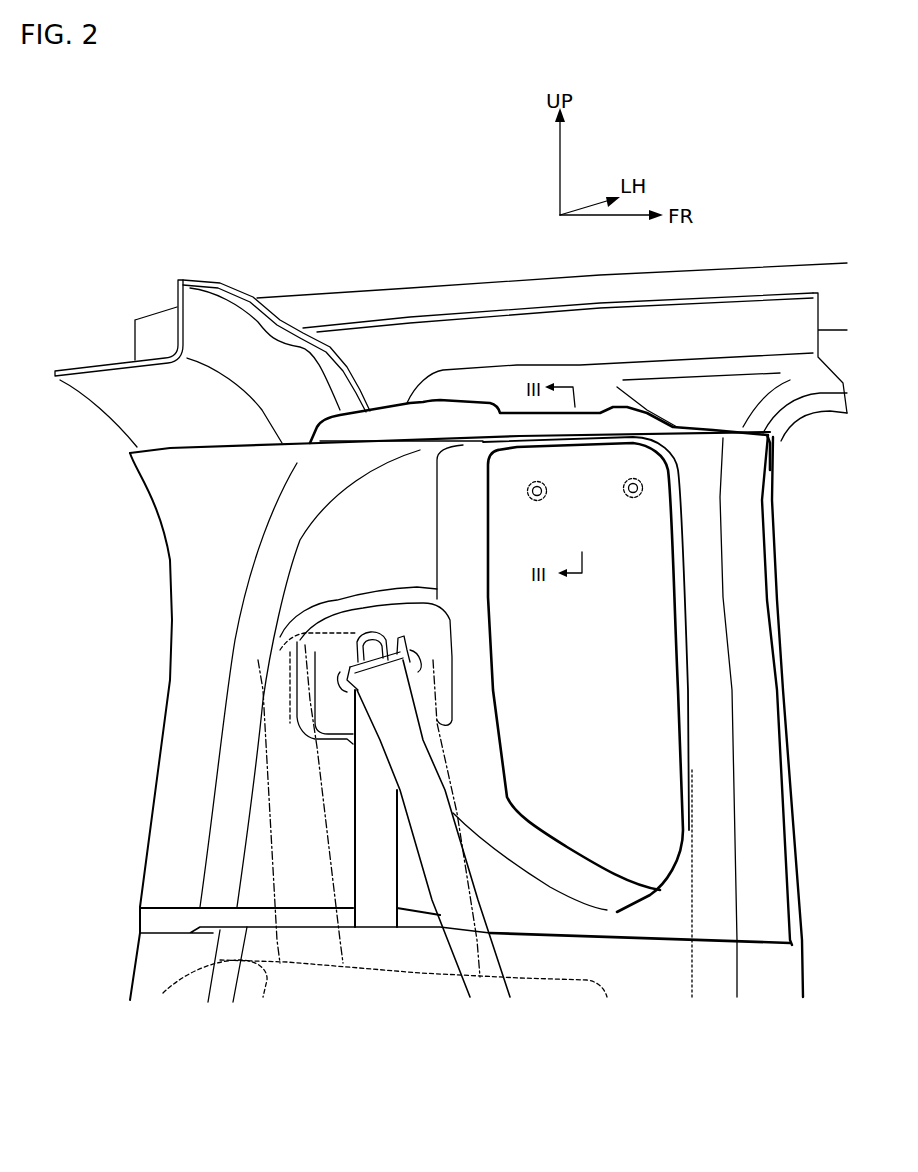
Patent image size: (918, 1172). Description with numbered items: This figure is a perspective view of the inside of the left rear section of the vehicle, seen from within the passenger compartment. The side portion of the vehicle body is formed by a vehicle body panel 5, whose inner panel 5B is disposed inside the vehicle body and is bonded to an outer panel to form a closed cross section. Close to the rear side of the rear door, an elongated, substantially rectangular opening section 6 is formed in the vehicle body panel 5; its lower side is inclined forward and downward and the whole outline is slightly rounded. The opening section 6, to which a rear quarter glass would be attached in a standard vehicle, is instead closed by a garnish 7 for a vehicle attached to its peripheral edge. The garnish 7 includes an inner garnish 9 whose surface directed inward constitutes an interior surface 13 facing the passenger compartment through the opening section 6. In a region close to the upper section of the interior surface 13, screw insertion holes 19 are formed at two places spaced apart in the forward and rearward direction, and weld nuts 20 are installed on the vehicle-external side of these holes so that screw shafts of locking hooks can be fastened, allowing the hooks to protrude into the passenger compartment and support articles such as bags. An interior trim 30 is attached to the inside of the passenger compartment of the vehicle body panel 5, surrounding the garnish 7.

The vehicle body panel 5 is at (552, 352).
The inner panel 5B is at (497, 388).
The opening section 6 is at (607, 867).
The garnish for a vehicle 7 is at (696, 768).
The inner garnish 9 is at (657, 702).
The interior surface 13 is at (630, 630).
The screw insertion holes 19 is at (534, 491).
The weld nuts 20 is at (546, 488).
The interior trim 30 is at (645, 920).